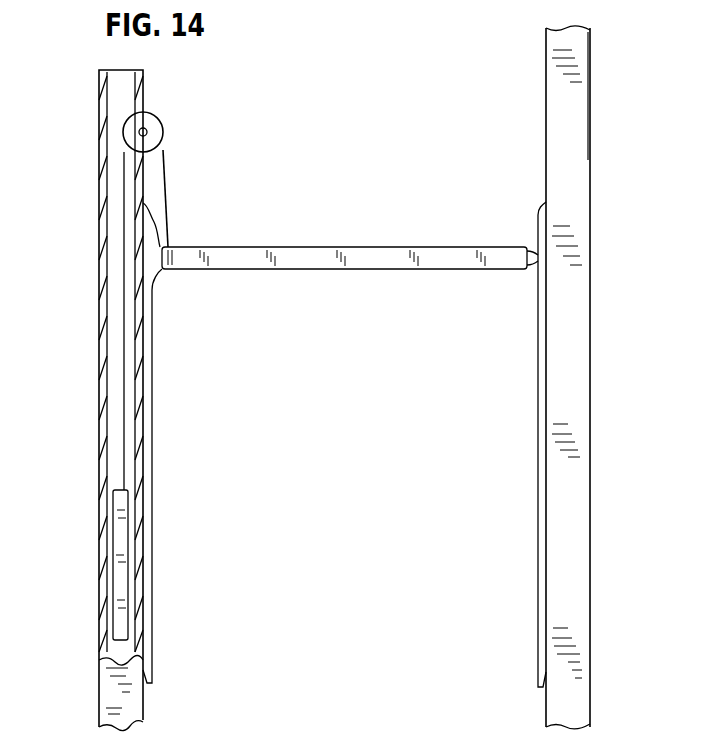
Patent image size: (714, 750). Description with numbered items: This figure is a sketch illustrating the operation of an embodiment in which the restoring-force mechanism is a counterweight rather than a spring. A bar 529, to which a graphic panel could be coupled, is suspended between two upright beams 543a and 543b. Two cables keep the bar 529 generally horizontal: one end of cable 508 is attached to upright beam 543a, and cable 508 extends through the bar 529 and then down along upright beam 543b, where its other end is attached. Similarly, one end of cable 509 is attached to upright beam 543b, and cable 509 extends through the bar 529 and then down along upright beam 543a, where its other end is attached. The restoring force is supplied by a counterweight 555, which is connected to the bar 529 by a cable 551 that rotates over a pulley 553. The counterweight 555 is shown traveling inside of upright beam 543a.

The upright beam 543a is at (99, 424).
The upright beam 543b is at (546, 94).
The bar 529 is at (345, 248).
The cable 509 is at (152, 410).
The cable 508 is at (163, 222).
The cable 551 is at (163, 182).
The pulley 553 is at (152, 128).
The counterweight 555 is at (123, 560).